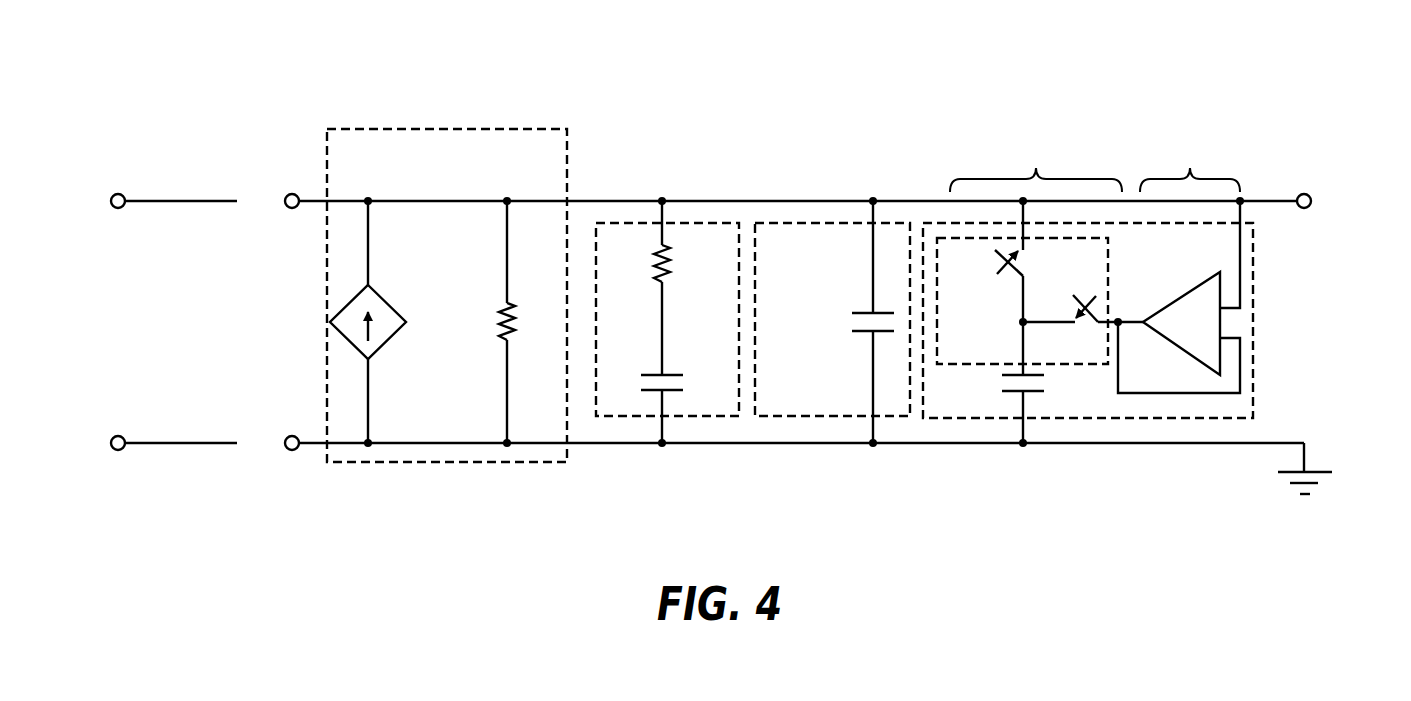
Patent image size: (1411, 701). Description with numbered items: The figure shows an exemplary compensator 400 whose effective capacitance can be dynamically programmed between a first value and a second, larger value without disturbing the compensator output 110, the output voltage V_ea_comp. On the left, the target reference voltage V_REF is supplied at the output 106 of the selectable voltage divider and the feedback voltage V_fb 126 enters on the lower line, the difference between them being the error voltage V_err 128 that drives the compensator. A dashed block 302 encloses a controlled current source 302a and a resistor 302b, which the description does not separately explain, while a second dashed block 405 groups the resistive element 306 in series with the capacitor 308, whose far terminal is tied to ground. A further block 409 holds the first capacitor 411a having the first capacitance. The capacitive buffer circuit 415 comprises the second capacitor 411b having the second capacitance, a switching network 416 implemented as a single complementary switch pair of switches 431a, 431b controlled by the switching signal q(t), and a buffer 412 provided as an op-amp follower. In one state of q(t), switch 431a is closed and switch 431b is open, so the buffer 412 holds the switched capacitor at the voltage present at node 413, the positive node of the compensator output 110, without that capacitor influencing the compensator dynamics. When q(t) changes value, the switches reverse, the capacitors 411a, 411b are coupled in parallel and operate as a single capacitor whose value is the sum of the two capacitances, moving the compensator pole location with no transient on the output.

The compensator 400 is at (293, 66).
The output of selectable voltage divider 106 is at (120, 193).
The feedback voltage 126 is at (120, 451).
The error voltage 128 is at (220, 317).
The transconductance stage 302 is at (435, 128).
The controlled current source 302a is at (380, 298).
The output resistor Ro 302b is at (507, 302).
The compensation network 405 is at (615, 222).
The resistive element 306 is at (666, 246).
The capacitor 308 is at (653, 393).
The first capacitor network 409 is at (797, 222).
The first capacitor 411a is at (867, 313).
The second capacitor 411b is at (1012, 393).
The capacitive buffer circuit 415 is at (1253, 378).
The switching network 416 is at (945, 237).
The first switch 431a is at (1085, 298).
The second switch 431b is at (1007, 272).
The buffer 412 is at (1177, 347).
The node 413 is at (1243, 198).
The compensator output 110 is at (1370, 310).